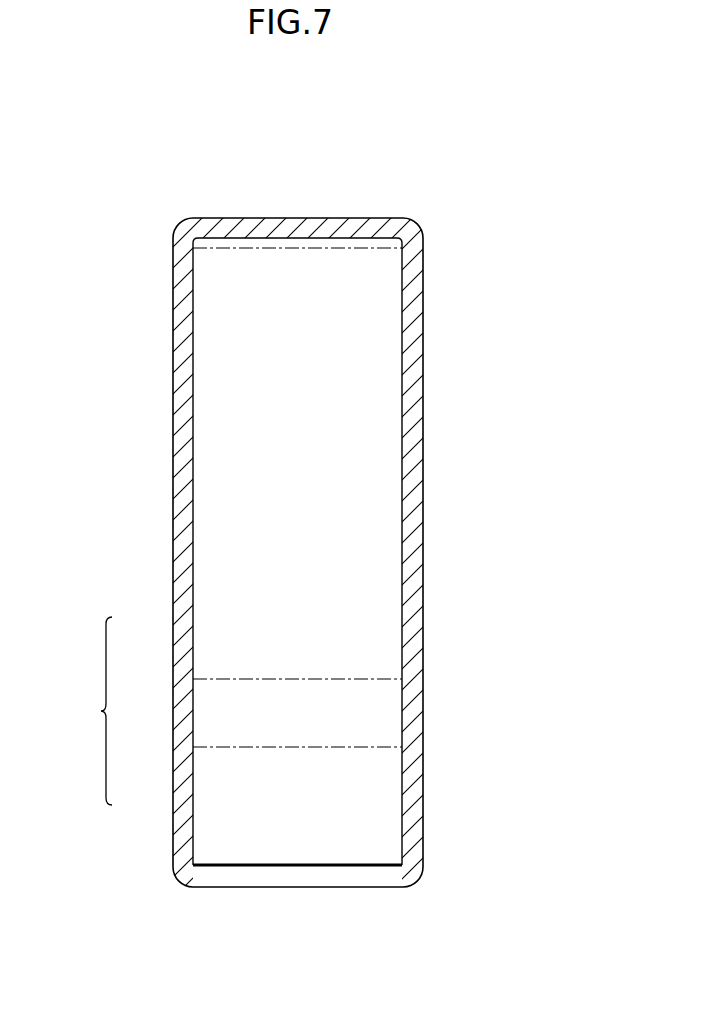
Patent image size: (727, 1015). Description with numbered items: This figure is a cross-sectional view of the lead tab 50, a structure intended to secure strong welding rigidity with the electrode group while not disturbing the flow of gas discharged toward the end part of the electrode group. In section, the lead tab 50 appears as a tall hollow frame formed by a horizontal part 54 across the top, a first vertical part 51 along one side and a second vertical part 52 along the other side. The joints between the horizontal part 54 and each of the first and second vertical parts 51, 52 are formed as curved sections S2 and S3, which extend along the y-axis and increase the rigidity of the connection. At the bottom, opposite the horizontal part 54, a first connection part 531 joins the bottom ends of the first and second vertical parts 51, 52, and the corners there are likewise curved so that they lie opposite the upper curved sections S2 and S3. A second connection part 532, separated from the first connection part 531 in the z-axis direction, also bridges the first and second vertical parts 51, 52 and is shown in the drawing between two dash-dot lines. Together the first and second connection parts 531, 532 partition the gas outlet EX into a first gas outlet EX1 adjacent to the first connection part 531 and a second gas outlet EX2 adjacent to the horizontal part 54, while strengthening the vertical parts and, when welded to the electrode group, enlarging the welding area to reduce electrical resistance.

The lead tab 50 is at (368, 159).
The first vertical part 51 is at (411, 396).
The second vertical part 52 is at (181, 371).
The first connection part 531 is at (265, 876).
The second connection part 532 is at (380, 710).
The horizontal part 54 is at (258, 224).
The curved section S2 is at (410, 230).
The curved section S3 is at (181, 231).
The gas outlet EX is at (92, 711).
The first gas outlet EX1 is at (222, 788).
The second gas outlet EX2 is at (222, 632).